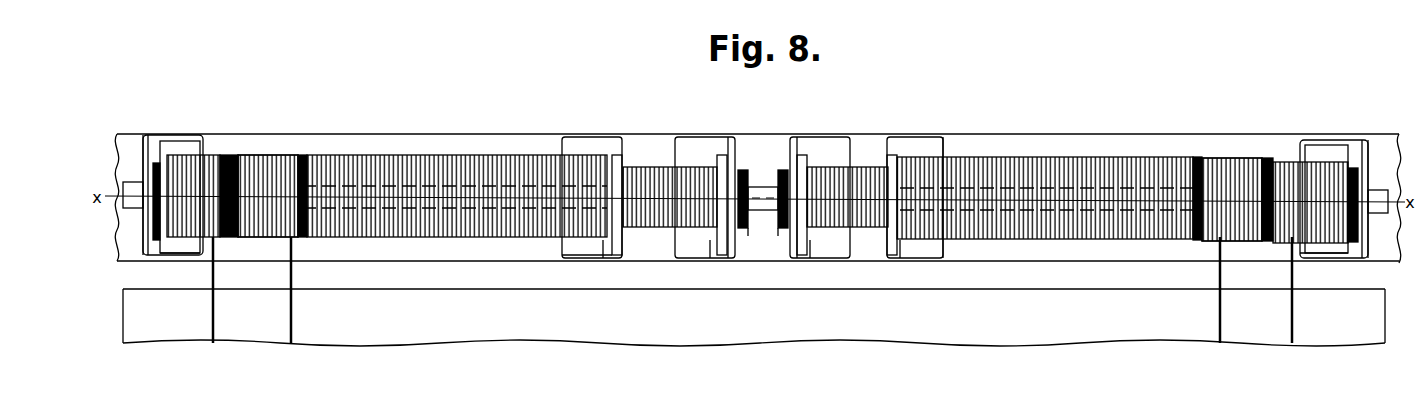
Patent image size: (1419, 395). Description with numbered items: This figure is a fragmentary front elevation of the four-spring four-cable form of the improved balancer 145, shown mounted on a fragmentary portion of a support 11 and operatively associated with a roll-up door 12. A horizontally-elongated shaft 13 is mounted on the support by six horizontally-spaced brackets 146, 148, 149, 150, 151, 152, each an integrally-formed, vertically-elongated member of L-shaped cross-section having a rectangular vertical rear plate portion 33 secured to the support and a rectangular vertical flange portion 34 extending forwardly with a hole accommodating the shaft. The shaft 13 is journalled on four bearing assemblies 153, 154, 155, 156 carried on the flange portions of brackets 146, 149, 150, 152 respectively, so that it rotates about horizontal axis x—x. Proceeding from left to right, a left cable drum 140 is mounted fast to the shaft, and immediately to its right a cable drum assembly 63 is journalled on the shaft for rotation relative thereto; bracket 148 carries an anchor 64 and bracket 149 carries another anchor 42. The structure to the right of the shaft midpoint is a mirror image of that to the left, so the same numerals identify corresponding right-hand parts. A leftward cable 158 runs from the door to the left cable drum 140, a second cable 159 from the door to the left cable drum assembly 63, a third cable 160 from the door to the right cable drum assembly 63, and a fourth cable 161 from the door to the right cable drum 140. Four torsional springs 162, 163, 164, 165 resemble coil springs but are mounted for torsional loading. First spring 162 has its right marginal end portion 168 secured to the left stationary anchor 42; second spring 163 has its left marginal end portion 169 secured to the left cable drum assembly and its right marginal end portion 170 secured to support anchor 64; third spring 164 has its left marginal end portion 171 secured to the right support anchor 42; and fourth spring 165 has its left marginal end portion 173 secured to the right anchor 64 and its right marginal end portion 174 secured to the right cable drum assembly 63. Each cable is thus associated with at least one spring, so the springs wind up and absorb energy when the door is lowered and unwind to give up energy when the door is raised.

The support 11 is at (412, 133).
The roll-up door 12 is at (786, 352).
The shaft 13 is at (754, 166).
The rear plate portion 33 is at (185, 148).
The flange portion 34 is at (140, 150).
The anchor 42 is at (712, 258).
The cable drum assembly 63 is at (292, 152).
The anchor 64 is at (606, 258).
The cable drum 140 is at (232, 152).
The balancer second form 145 is at (779, 124).
The bracket 146 is at (172, 133).
The bracket 148 is at (577, 136).
The bracket 149 is at (679, 136).
The bracket 150 is at (811, 136).
The bracket 151 is at (914, 134).
The bracket 152 is at (1340, 136).
The bearing assembly 153 is at (160, 261).
The bearing assembly 154 is at (760, 235).
The bearing assembly 155 is at (775, 232).
The bearing assembly 156 is at (1318, 261).
The leftward cable 158 is at (214, 309).
The second cable 159 is at (292, 312).
The third cable 160 is at (1218, 320).
The fourth cable 161 is at (1291, 320).
The first spring 162 is at (640, 163).
The second spring 163 is at (476, 152).
The third spring 164 is at (867, 160).
The fourth spring 165 is at (1076, 154).
The right marginal end portion 168 is at (701, 140).
The left marginal end portion 169 is at (318, 147).
The right marginal end portion 170 is at (590, 258).
The left marginal end portion 171 is at (814, 162).
The left marginal end portion 173 is at (926, 158).
The right marginal end portion 174 is at (1178, 156).